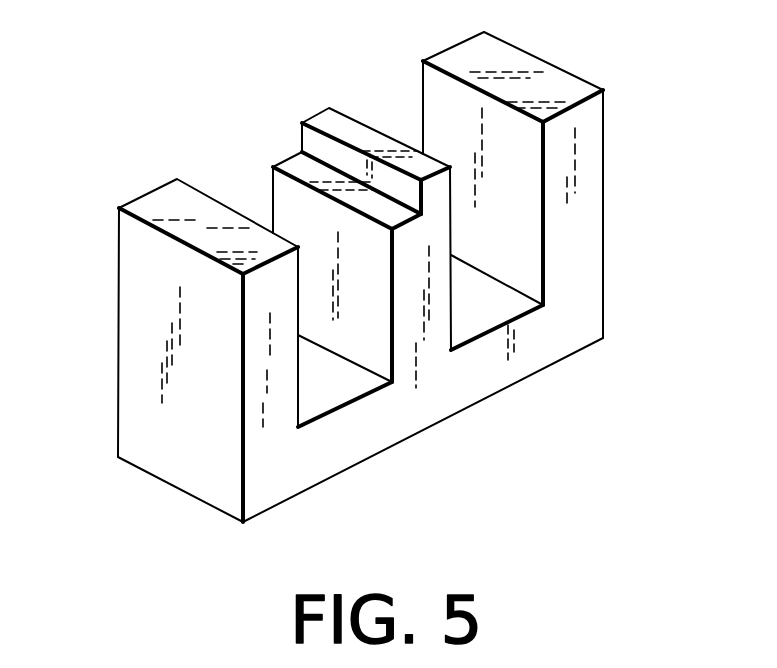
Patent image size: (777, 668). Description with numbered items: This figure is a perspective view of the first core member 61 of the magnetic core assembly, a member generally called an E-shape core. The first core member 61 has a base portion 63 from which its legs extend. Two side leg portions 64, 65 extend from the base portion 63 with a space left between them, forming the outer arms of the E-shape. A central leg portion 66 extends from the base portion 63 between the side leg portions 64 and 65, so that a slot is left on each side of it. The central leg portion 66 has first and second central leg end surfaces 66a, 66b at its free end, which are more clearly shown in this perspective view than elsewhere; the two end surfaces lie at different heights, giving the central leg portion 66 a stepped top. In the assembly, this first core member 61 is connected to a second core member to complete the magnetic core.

The first core member 61 is at (362, 277).
The base portion 63 is at (448, 395).
The side leg portion 64 is at (143, 330).
The side leg portion 65 is at (587, 175).
The central leg portion 66 is at (318, 209).
The first central leg end surface 66a is at (353, 133).
The second central leg end surface 66b is at (298, 163).